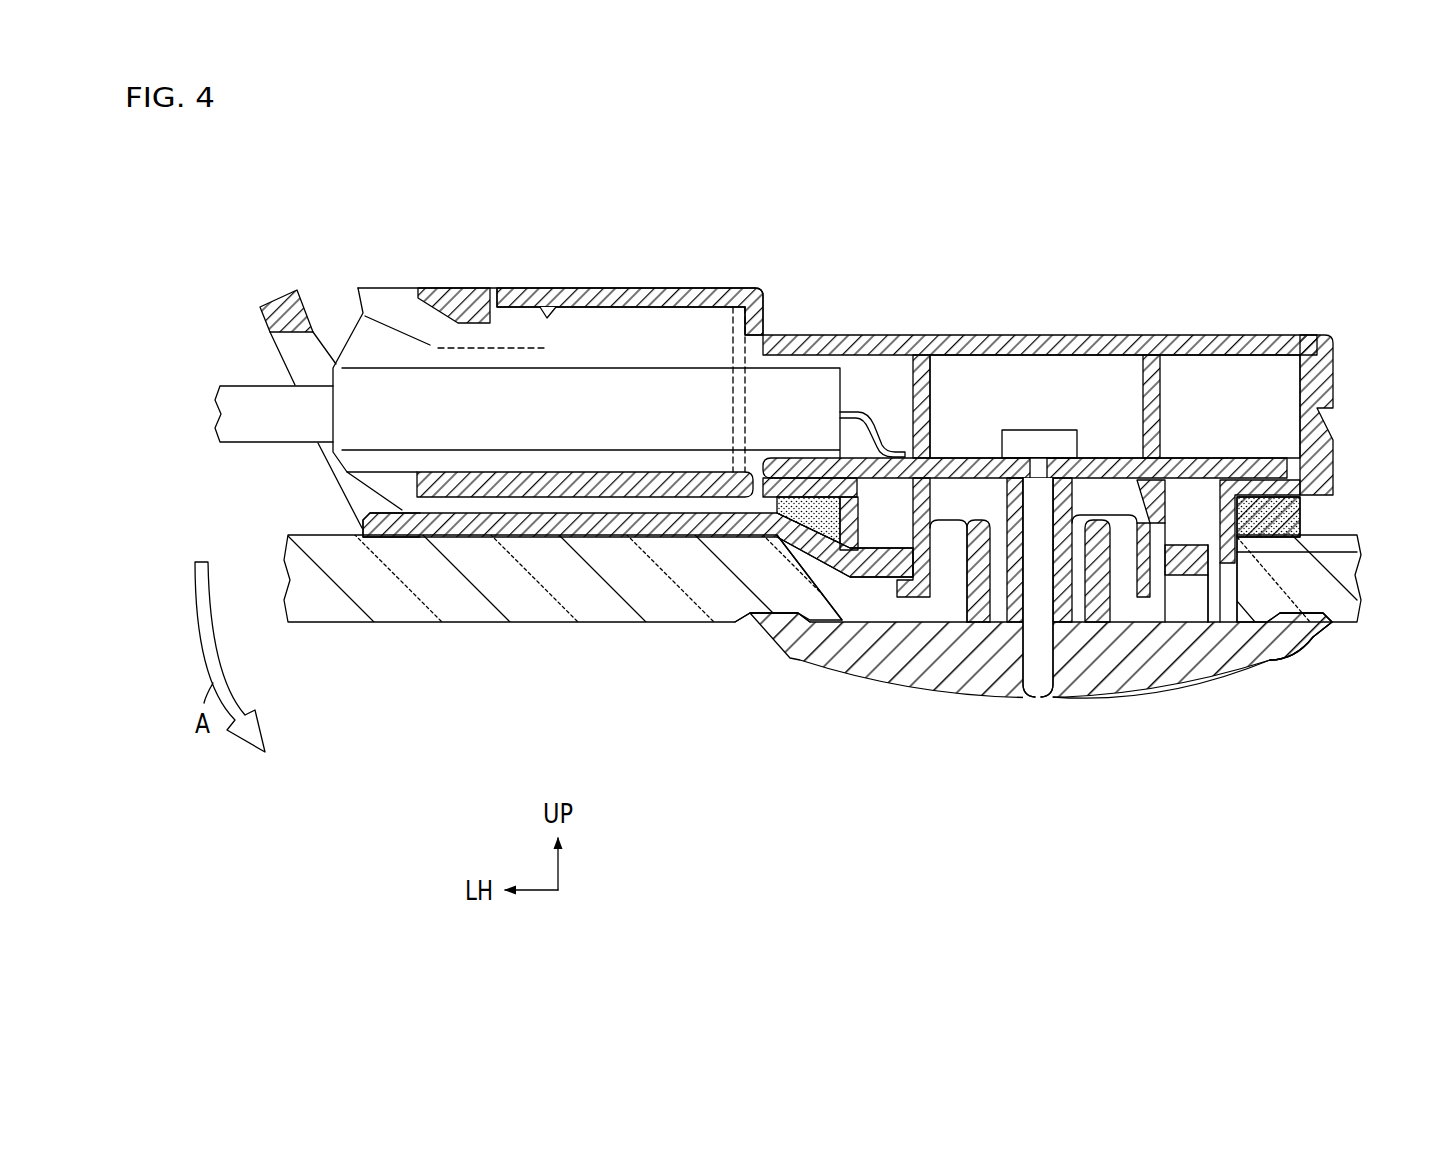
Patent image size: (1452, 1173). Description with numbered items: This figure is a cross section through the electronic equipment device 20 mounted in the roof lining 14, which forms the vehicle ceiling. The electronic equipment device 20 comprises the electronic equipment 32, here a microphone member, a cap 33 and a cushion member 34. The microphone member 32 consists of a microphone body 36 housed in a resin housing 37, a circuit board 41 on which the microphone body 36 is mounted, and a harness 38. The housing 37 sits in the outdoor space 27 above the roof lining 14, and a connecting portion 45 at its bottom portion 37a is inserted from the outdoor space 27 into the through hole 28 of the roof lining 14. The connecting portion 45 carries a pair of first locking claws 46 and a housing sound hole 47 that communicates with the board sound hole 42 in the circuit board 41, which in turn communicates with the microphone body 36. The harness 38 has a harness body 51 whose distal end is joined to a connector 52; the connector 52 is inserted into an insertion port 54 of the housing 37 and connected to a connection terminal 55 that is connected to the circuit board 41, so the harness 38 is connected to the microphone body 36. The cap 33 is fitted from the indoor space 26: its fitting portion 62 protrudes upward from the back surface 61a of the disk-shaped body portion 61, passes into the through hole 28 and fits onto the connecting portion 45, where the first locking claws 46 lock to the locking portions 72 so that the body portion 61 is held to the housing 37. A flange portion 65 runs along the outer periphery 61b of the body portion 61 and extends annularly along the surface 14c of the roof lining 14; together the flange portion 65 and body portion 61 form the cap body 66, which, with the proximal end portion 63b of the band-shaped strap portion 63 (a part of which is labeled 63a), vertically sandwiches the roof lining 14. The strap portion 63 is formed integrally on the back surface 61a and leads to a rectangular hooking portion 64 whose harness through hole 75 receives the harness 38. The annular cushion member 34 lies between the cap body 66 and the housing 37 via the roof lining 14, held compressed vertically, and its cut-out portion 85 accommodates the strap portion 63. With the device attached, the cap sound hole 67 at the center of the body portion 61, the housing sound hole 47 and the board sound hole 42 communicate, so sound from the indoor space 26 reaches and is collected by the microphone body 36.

The roof lining 14 is at (593, 605).
The surface of the roof lining 14c is at (745, 622).
The electronic equipment device 20 is at (1250, 224).
The indoor space 26 is at (728, 840).
The outdoor space 27 is at (888, 231).
The through hole 28 is at (1220, 595).
The electronic equipment 32 is at (1067, 329).
The cap 33 is at (935, 702).
The cushion member 34 is at (1290, 520).
The microphone body 36 is at (1060, 440).
The housing 37 is at (980, 334).
The bottom portion 37a is at (727, 613).
The harness 38 is at (608, 133).
The circuit board 41 is at (1220, 480).
The board sound hole 42 is at (1040, 467).
The connecting portion 45 is at (1170, 513).
The first locking claws 46 is at (905, 585).
The housing sound hole 47 is at (1050, 527).
The harness body 51 is at (258, 400).
The connector 52 is at (592, 322).
The insertion port 54 is at (548, 316).
The connection terminal 55 is at (870, 440).
The body portion 61 is at (1105, 692).
The back surface 61a is at (1140, 612).
The outer periphery 61b is at (1298, 657).
The fitting portion 62 is at (1215, 583).
The strap portion 63 is at (527, 543).
The bracket plate end 63a is at (390, 524).
The proximal end portion 63b is at (790, 578).
The hooking portion 64 is at (288, 300).
The flange portion 65 is at (1325, 655).
The cap body 66 is at (1440, 912).
The cap sound hole 67 is at (1036, 685).
The locking portions 72 is at (1240, 552).
The harness through hole 75 is at (345, 480).
The cut-out portion 85 is at (840, 510).